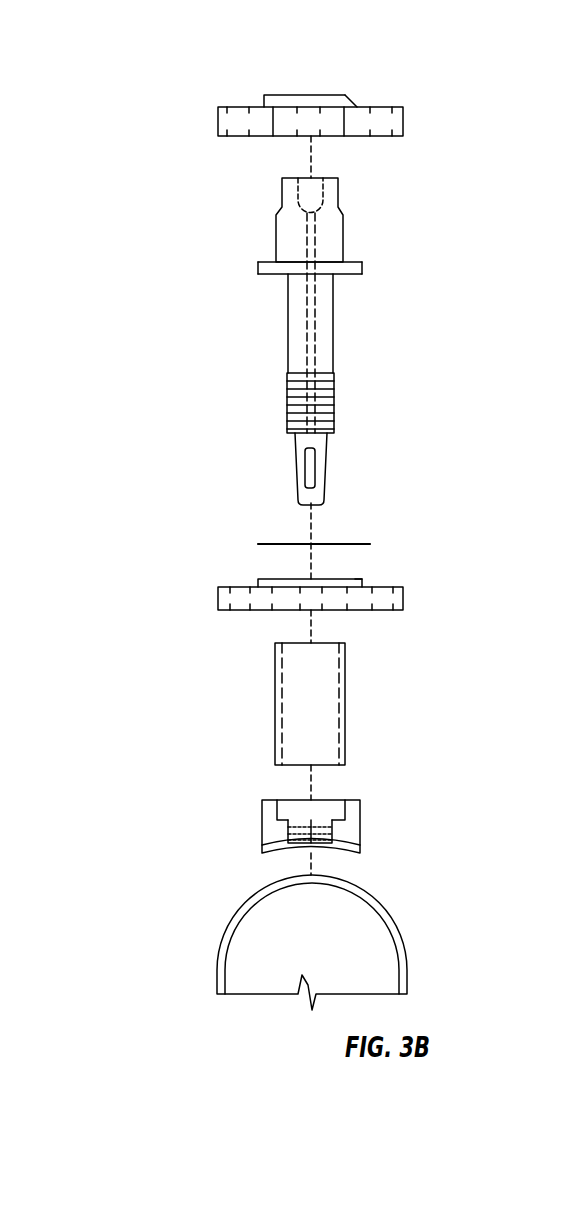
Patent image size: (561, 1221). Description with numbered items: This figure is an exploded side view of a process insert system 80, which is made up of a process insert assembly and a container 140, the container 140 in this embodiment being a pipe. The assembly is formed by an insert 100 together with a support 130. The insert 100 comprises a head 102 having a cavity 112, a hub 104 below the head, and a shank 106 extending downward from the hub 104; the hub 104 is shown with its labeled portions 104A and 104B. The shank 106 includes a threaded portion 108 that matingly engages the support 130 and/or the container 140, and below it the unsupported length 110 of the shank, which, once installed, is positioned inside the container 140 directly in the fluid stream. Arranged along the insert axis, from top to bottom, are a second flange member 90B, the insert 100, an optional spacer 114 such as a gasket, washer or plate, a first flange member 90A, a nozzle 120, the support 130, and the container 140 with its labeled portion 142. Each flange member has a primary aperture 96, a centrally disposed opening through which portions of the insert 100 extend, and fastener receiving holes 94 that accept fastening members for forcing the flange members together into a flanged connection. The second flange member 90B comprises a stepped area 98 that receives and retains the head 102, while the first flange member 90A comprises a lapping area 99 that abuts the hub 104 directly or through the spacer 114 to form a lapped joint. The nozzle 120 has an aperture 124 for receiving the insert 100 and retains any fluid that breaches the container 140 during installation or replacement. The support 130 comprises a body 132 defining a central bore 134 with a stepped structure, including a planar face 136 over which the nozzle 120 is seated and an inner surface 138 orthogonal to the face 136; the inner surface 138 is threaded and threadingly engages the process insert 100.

The process insert system 80 is at (76, 77).
The second flange member 90B is at (213, 124).
The fastener receiving holes 94 is at (243, 106).
The primary aperture 96 is at (295, 92).
The stepped area 98 is at (357, 104).
The process insert 100 is at (364, 204).
The head 102 is at (283, 222).
The hub 104 is at (262, 268).
The flange upper surface 104A is at (354, 262).
The flange lower surface 104B is at (350, 276).
The shank 106 is at (254, 360).
The threaded portion 108 is at (335, 407).
The unsupported length 110 is at (327, 480).
The cavity 112 is at (314, 352).
The first flange member 90A is at (422, 600).
The spacer 114 is at (370, 544).
The lapping area 99 is at (363, 587).
The nozzle 120 is at (366, 712).
The aperture 124 is at (317, 742).
The support 130 is at (366, 826).
The body 132 is at (272, 838).
The central bore 134 is at (320, 811).
The planar face 136 is at (278, 810).
The inner surface 138 is at (352, 852).
The container 140 is at (217, 950).
The tube wall 142 is at (298, 885).